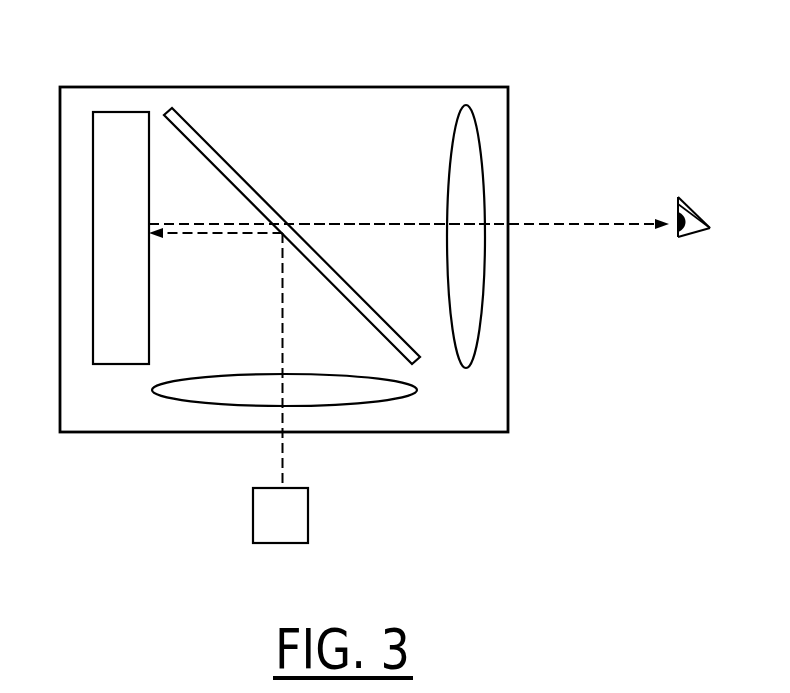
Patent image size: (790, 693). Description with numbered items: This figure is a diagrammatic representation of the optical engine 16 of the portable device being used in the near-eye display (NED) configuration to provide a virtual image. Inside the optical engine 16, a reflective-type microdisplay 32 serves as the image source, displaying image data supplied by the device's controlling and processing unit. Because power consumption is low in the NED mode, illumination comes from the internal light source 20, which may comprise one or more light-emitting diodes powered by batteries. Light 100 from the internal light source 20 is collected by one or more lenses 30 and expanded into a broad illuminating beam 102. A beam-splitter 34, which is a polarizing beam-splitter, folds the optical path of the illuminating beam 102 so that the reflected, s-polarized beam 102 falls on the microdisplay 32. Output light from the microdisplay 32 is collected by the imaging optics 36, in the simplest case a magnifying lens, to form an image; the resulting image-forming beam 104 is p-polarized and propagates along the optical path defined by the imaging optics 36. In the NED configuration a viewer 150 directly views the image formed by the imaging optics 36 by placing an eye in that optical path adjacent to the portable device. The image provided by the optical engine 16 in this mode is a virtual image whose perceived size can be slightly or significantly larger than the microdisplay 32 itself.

The optical engine 16 is at (285, 87).
The internal light source 20 is at (310, 510).
The lens 30 is at (358, 392).
The reflective-type microdisplay 32 is at (92, 230).
The beam-splitter 34 is at (183, 120).
The imaging optics 36 is at (477, 192).
The light 100 is at (282, 455).
The illuminating beam 102 is at (183, 233).
The image-forming beam 104 is at (523, 226).
The viewer 150 is at (703, 218).